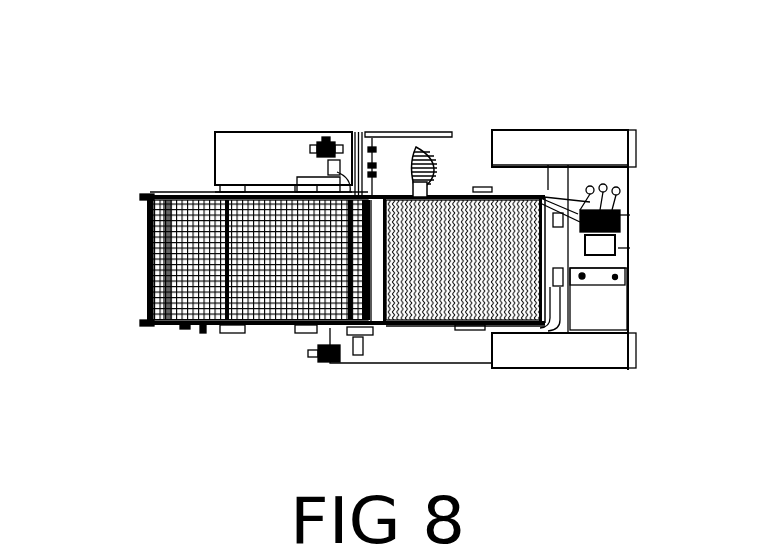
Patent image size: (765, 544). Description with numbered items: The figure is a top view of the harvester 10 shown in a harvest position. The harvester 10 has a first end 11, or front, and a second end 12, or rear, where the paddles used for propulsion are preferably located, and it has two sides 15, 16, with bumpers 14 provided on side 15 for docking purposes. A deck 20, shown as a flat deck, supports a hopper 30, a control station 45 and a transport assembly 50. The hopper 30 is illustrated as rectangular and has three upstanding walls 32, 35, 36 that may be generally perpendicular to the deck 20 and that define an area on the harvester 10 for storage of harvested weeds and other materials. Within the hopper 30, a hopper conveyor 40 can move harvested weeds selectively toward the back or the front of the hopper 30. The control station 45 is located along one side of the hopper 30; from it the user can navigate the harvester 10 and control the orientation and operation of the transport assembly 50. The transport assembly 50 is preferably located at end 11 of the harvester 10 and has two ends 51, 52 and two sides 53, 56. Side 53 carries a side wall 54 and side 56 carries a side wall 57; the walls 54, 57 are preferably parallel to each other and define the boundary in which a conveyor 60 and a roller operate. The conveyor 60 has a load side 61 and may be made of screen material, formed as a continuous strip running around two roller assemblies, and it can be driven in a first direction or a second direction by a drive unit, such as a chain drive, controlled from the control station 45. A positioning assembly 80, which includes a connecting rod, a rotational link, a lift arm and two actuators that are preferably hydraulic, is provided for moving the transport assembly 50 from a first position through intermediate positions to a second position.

The harvester 10 is at (540, 117).
The end 11 is at (215, 160).
The end 12 is at (630, 222).
The bumpers 14 is at (447, 130).
The side 15 is at (465, 133).
The side 16 is at (468, 365).
The deck 20 is at (403, 155).
The hopper 30 is at (520, 330).
The upstanding wall 32 is at (527, 330).
The upstanding wall 35 is at (513, 195).
The upstanding wall 36 is at (447, 330).
The hopper conveyor 40 is at (397, 327).
The control station 45 is at (380, 174).
The transport assembly 50 is at (213, 325).
The end 51 is at (148, 305).
The end 52 is at (380, 327).
The side 53 is at (210, 192).
The side wall 54 is at (146, 197).
The side 56 is at (185, 325).
The side wall 57 is at (148, 327).
The conveyor 60 is at (148, 243).
The load side 61 is at (148, 283).
The positioning assembly 80 is at (245, 330).